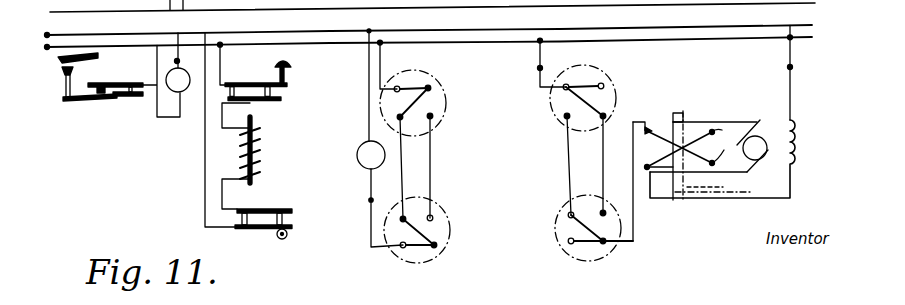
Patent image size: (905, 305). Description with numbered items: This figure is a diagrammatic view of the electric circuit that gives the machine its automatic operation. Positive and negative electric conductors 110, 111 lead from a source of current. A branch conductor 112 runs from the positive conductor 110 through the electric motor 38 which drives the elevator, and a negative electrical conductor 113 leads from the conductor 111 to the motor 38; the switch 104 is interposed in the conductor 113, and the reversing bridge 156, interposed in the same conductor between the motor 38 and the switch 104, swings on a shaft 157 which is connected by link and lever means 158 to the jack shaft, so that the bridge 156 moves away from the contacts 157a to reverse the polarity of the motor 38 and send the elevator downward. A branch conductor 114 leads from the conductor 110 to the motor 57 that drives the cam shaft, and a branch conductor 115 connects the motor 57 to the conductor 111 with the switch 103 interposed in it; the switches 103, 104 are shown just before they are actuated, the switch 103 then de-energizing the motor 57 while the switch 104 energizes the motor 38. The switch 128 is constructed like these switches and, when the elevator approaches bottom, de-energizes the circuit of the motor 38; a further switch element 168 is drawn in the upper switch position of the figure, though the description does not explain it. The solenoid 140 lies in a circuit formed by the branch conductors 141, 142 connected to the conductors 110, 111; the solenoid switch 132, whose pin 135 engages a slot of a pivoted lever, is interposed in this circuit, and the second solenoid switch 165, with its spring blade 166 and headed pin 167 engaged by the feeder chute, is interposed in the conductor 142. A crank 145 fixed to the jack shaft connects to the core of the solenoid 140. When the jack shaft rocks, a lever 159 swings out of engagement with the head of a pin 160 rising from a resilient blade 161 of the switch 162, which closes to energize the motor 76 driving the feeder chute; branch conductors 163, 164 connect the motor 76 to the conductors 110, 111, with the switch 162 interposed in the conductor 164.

The positive electric conductor 110 is at (537, 30).
The negative electric conductor 111 is at (493, 42).
The branch conductor 112 is at (789, 67).
The negative electrical conductor 113 is at (538, 68).
The branch conductor 114 is at (369, 103).
The branch conductor 115 is at (369, 201).
The motor 57 is at (358, 150).
The motor 76 is at (182, 94).
The branch conductor 163 is at (192, 50).
The branch conductor 164 is at (166, 118).
The lever 159 is at (58, 59).
The pin 160 is at (62, 87).
The resilient blade 161 is at (98, 98).
The switch 162 is at (115, 99).
The branch conductor 141 is at (205, 158).
The second solenoid switch 165 is at (287, 91).
The spring blade 166 is at (289, 78).
The headed pin 167 is at (290, 62).
The branch conductor 142 is at (244, 110).
The crank 145 is at (254, 118).
The solenoid 140 is at (262, 141).
The solenoid switch 132 is at (263, 209).
The pin 135 is at (288, 234).
The switch 168 is at (447, 109).
The switch 103 is at (452, 225).
The switch 128 is at (610, 85).
The switch 104 is at (599, 260).
The shaft 157 is at (685, 121).
The contacts 157a is at (672, 148).
The link and lever means 158 is at (686, 146).
The reversing bridge 156 is at (649, 169).
The electric motor 38 is at (788, 120).